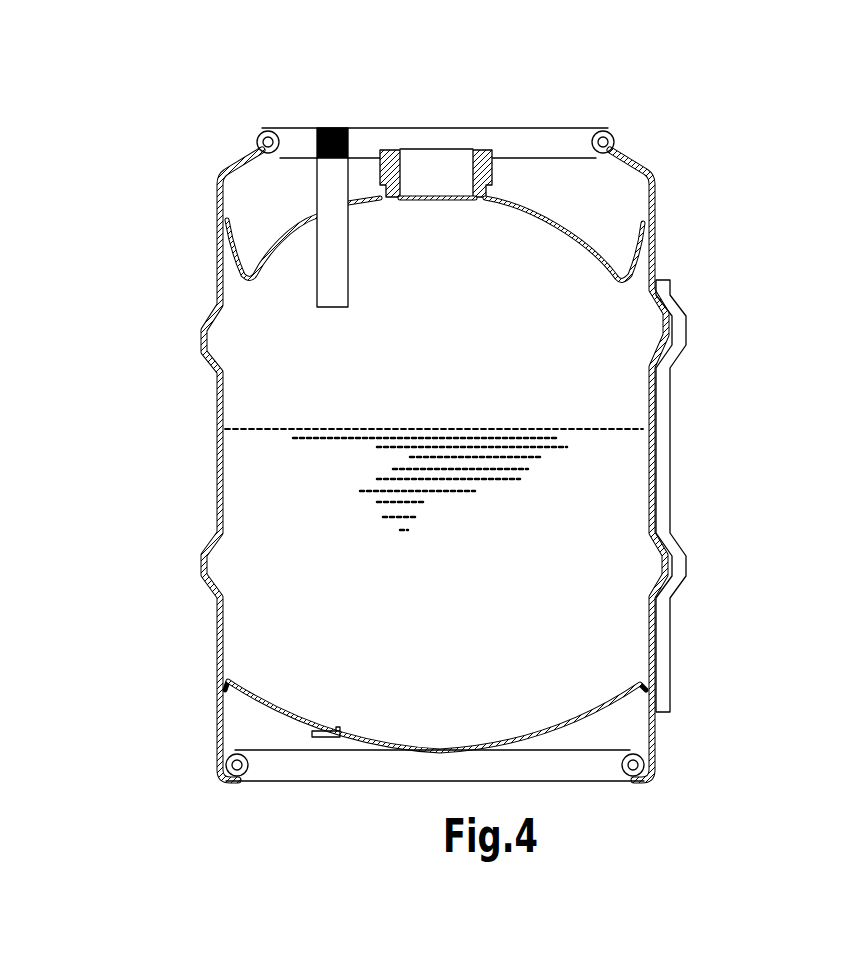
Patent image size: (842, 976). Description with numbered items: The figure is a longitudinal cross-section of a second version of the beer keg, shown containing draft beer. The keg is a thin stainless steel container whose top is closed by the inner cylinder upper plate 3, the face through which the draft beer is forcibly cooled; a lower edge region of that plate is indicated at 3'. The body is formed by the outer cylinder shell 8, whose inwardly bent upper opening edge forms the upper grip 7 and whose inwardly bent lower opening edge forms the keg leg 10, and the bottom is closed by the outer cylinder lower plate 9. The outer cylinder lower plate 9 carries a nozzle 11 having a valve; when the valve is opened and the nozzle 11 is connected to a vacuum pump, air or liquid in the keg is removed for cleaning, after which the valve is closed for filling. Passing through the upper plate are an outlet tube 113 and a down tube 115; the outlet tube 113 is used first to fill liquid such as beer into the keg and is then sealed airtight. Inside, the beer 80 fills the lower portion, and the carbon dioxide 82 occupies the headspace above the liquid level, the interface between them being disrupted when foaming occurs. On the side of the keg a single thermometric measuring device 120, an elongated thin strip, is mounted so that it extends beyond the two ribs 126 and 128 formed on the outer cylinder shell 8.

The inner cylinder upper plate 3 is at (435, 227).
The liner lower edge 3' is at (196, 290).
The upper grip 7 is at (608, 130).
The outer cylinder shell 8 is at (657, 390).
The outer cylinder lower plate 9 is at (617, 705).
The keg leg 10 is at (642, 783).
The nozzle 11 is at (323, 737).
The beer 80 is at (363, 429).
The carbon dioxide 82 is at (573, 365).
The outlet tube 113 is at (488, 150).
The down tube 115 is at (333, 128).
The thermometric measuring device 120 is at (678, 335).
The rib 126 is at (200, 337).
The rib 128 is at (200, 567).